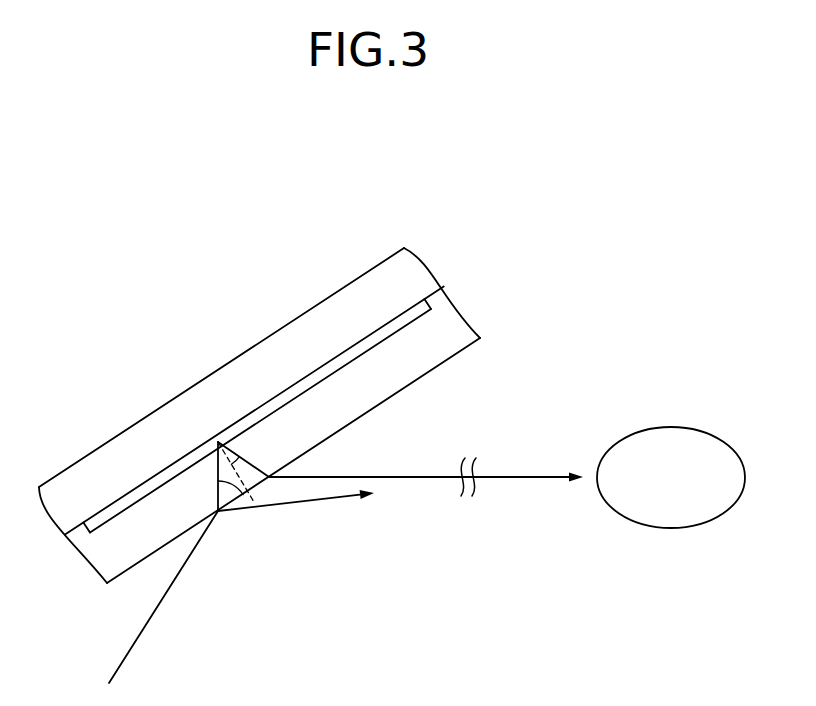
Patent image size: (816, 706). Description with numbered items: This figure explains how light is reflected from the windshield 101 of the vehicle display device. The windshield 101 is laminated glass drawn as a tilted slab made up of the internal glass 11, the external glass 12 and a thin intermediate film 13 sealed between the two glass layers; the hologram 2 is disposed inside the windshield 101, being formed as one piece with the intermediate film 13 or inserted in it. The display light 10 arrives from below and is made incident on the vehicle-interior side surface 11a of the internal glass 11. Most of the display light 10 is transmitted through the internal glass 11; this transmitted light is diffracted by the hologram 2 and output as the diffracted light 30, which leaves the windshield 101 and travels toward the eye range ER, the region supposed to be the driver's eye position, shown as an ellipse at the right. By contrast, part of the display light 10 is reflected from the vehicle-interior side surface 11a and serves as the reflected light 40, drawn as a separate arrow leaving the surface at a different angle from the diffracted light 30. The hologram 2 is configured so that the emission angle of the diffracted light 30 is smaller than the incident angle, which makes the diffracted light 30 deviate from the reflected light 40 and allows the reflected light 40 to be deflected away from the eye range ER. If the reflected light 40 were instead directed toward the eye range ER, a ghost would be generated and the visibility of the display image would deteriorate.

The windshield 101 is at (352, 242).
The hologram 2 is at (263, 410).
The external glass 12 is at (410, 272).
The intermediate film 13 is at (435, 300).
The internal glass 11 is at (437, 331).
The vehicle-interior side surface 11a is at (349, 422).
The display light 10 is at (130, 648).
The diffracted light 30 is at (427, 481).
The reflected light 40 is at (312, 503).
The eye range ER is at (675, 437).